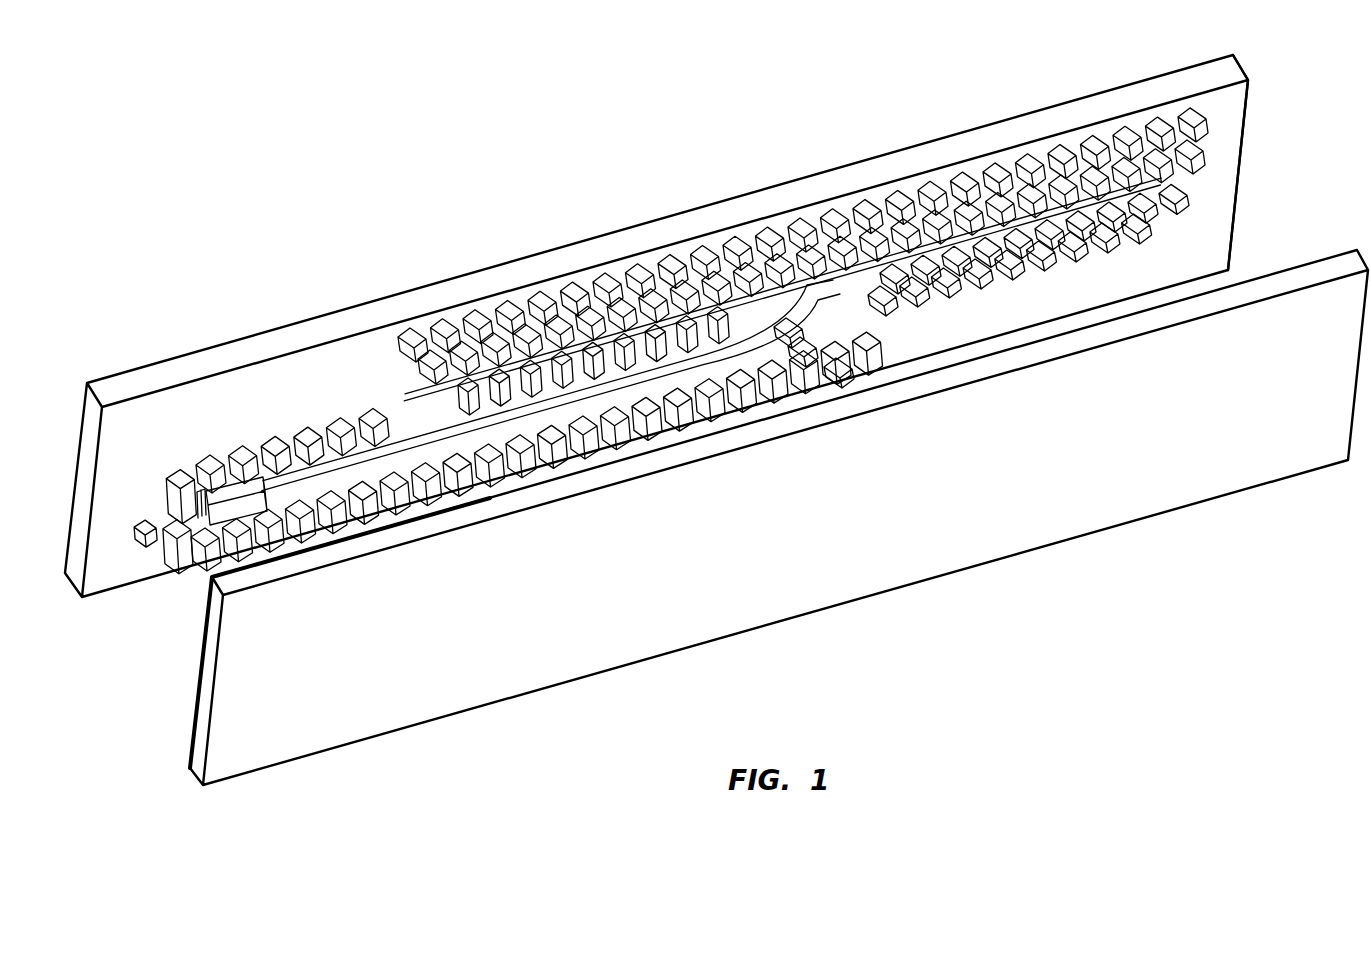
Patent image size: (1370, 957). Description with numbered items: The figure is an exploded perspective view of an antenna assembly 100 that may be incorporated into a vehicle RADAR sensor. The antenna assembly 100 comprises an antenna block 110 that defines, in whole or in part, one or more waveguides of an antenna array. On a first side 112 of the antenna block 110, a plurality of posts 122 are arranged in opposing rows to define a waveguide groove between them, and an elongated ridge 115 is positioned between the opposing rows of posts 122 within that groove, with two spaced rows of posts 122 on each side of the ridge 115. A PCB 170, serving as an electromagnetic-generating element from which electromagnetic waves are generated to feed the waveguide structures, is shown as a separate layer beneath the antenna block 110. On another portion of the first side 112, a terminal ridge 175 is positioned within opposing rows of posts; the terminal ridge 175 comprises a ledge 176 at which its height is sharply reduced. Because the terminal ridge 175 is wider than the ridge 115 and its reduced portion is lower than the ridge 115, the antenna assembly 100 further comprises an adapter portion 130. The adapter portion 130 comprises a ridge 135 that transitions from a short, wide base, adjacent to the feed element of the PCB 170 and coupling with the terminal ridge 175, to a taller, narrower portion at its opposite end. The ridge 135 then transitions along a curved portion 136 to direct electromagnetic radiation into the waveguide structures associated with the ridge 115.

The antenna assembly 100 is at (513, 245).
The antenna block 110 is at (1055, 118).
The first side 112 is at (1232, 176).
The elongated ridge 115 is at (1130, 190).
The posts 122 is at (1160, 122).
The adapter portion 130 is at (708, 420).
The ridge 135 is at (723, 367).
The curved portion 136 is at (794, 344).
The PCB 170 is at (1090, 500).
The terminal ridge 175 is at (235, 507).
The ledge 176 is at (293, 515).